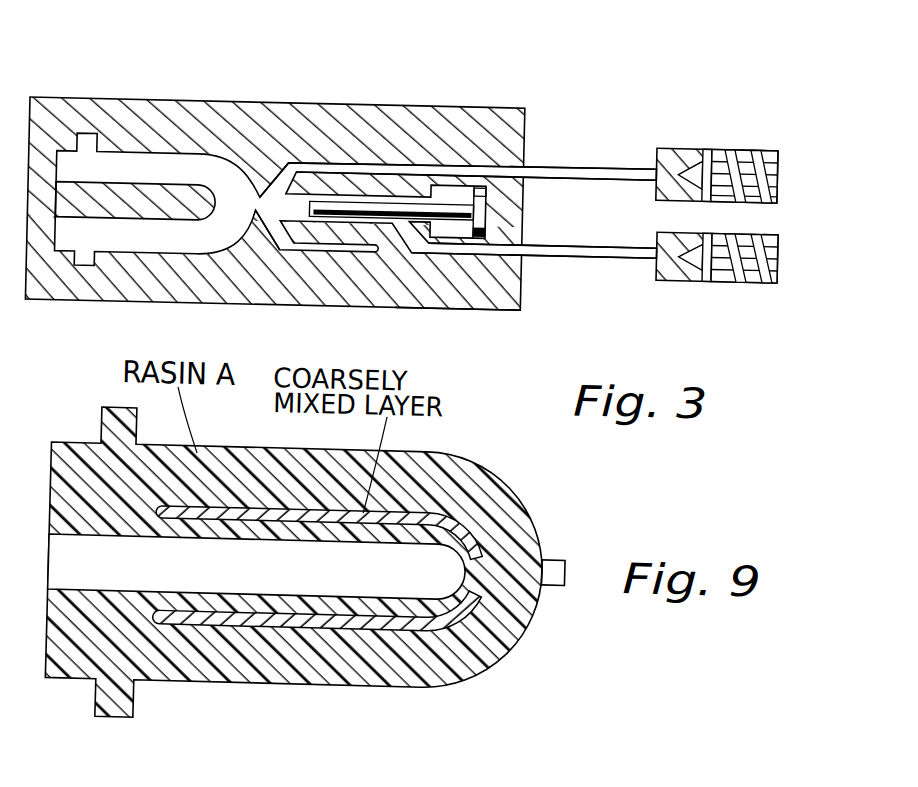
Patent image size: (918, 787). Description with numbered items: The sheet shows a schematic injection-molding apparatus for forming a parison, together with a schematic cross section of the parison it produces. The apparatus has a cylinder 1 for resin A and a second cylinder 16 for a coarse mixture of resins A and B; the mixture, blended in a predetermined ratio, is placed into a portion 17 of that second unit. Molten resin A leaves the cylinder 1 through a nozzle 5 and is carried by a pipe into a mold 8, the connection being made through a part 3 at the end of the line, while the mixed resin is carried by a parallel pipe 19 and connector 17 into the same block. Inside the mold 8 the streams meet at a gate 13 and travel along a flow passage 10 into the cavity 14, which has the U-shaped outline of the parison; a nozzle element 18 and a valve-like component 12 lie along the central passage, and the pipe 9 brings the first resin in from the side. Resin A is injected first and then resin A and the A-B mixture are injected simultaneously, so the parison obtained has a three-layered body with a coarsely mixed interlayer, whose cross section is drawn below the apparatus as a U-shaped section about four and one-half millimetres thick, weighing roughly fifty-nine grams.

The cylinder 1 is at (753, 131).
The first coupling 3 is at (676, 133).
The nozzle 5 is at (621, 151).
The mold 8 is at (414, 99).
The first supply pipe 9 is at (498, 152).
The flow passage 10 is at (476, 252).
The valve body 12 is at (459, 182).
The gate 13 is at (264, 191).
The cavity 14 is at (151, 157).
The cylinder 16 is at (756, 266).
The portion 17 is at (674, 267).
The nozzle 18 is at (344, 199).
The second supply pipe 19 is at (623, 247).